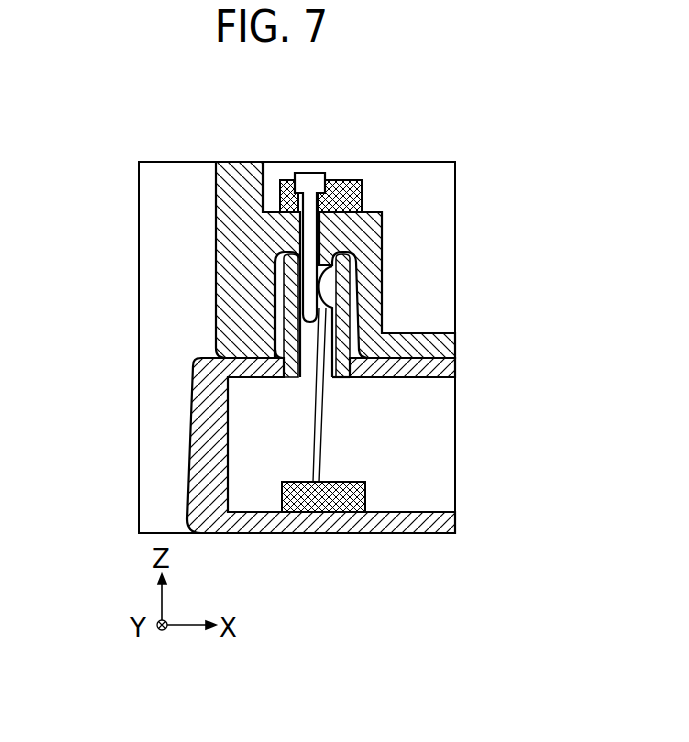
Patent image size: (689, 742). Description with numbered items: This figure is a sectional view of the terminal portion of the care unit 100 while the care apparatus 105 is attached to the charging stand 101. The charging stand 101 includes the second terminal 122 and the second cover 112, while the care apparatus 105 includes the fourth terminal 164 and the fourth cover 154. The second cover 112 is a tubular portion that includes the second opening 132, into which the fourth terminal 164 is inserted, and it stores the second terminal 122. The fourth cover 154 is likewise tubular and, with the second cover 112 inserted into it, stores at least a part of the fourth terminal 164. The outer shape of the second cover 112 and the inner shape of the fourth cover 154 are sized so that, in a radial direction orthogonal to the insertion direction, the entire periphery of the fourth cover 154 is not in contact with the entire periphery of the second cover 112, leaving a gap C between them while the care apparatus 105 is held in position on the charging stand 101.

The connector 100 is at (411, 135).
The charging stand 101 is at (192, 443).
The care apparatus 105 is at (213, 320).
The second cover 112 is at (343, 328).
The second terminal 122 is at (320, 433).
The second opening 132 is at (326, 258).
The fourth cover 154 is at (370, 263).
The fourth terminal 164 is at (307, 232).